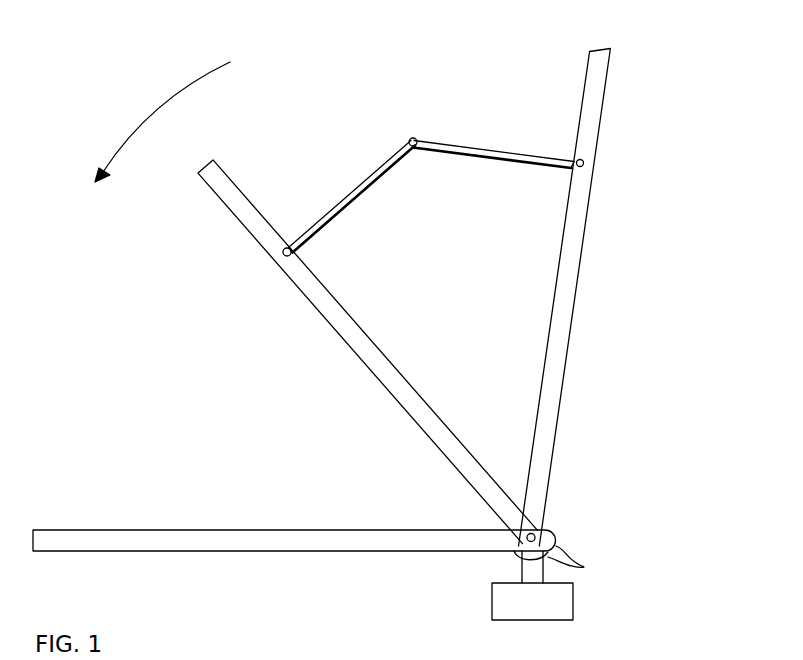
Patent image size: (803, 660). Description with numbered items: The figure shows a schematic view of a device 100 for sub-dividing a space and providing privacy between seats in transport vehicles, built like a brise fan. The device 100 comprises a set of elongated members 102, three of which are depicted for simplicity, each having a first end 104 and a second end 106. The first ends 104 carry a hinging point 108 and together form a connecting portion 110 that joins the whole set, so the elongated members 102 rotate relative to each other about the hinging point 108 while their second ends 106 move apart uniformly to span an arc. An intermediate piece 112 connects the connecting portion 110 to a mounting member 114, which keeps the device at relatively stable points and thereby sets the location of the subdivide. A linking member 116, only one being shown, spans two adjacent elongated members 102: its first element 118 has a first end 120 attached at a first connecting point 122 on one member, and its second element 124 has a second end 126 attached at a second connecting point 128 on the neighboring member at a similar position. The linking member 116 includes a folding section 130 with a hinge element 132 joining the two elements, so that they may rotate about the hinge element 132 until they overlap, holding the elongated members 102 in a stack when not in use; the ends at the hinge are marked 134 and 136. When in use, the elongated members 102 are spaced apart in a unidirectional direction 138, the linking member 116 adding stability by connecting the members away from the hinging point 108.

The device 100 is at (648, 33).
The elongated member 102 is at (278, 530).
The first end 104 is at (586, 563).
The second end 106 is at (602, 67).
The hinging point 108 is at (541, 512).
The connecting portion 110 is at (572, 529).
The intermediate piece 112 is at (522, 564).
The mounting member 114 is at (552, 614).
The linking member 116 is at (426, 100).
The first element 118 is at (495, 140).
The first end 120 is at (567, 168).
The first connecting point 122 is at (584, 163).
The second element 124 is at (348, 192).
The second end 126 is at (305, 247).
The second connecting point 128 is at (283, 256).
The folding section 130 is at (417, 162).
The hinge element 132 is at (413, 138).
The end of second link 134 is at (422, 140).
The end of first link 136 is at (406, 146).
The unidirectional direction 138 is at (163, 108).